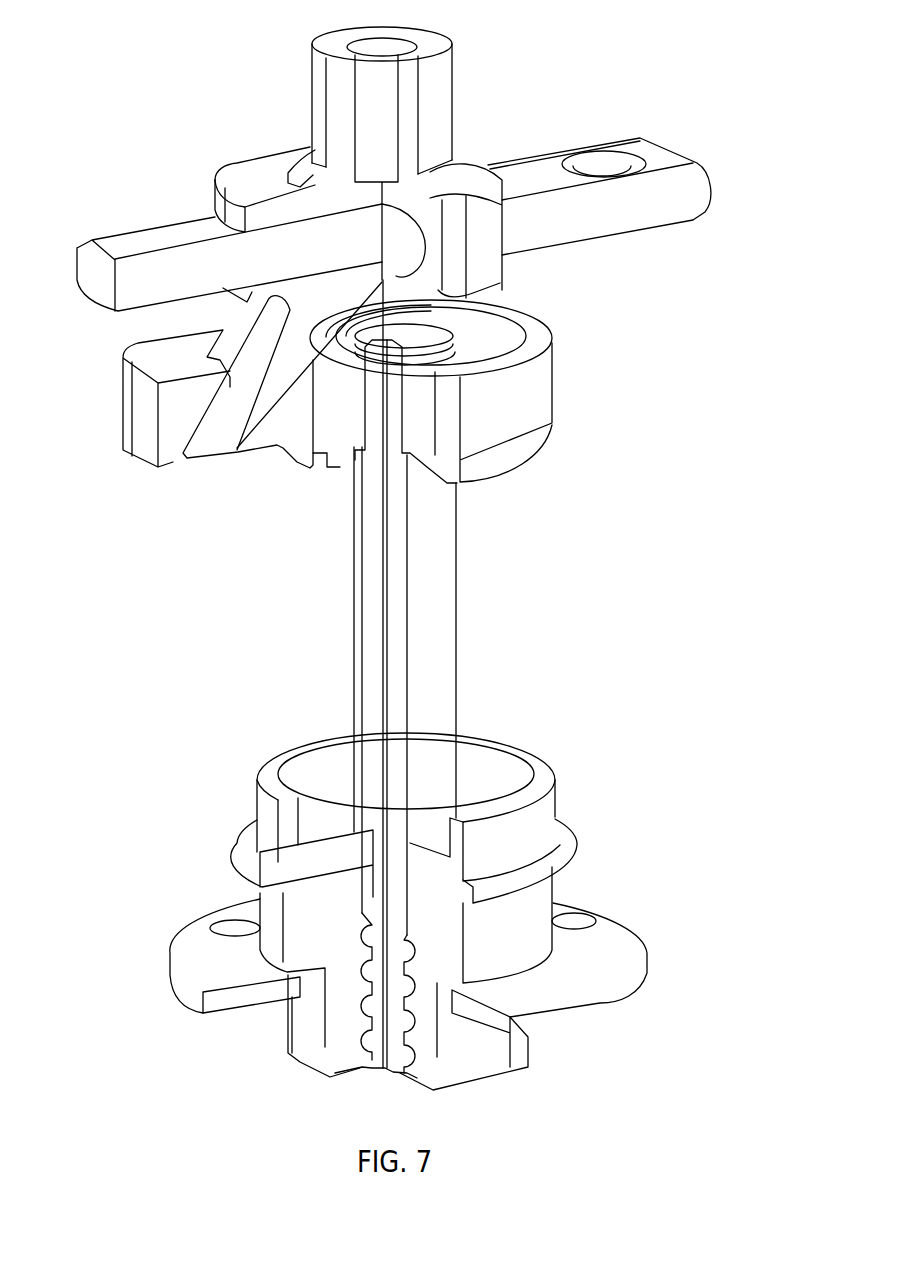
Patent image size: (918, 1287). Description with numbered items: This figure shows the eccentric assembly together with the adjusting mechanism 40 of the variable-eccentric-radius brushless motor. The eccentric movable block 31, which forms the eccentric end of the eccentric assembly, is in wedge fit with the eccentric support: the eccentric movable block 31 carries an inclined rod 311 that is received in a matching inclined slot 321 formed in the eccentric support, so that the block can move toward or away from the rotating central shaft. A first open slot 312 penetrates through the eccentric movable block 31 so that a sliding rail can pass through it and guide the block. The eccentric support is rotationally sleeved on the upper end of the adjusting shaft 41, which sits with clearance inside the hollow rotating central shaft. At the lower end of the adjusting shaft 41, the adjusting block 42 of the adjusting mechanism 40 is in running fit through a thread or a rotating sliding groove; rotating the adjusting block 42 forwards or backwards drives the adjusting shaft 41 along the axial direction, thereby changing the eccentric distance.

The eccentric movable block 31 is at (428, 108).
The inclined rod 311 is at (300, 368).
The first open slot 312 is at (231, 230).
The inclined slot 321 is at (203, 424).
The adjusting mechanism 40 is at (630, 867).
The adjusting shaft 41 is at (433, 662).
The adjusting block 42 is at (528, 933).